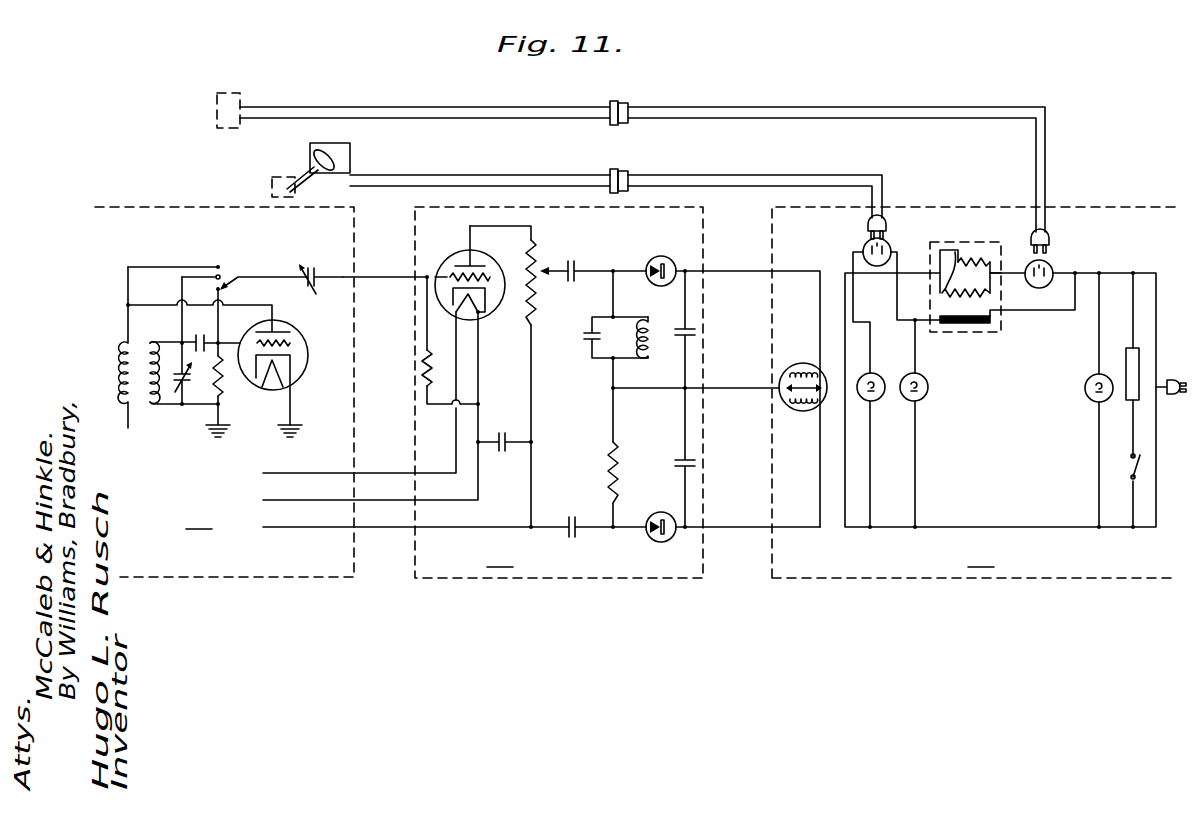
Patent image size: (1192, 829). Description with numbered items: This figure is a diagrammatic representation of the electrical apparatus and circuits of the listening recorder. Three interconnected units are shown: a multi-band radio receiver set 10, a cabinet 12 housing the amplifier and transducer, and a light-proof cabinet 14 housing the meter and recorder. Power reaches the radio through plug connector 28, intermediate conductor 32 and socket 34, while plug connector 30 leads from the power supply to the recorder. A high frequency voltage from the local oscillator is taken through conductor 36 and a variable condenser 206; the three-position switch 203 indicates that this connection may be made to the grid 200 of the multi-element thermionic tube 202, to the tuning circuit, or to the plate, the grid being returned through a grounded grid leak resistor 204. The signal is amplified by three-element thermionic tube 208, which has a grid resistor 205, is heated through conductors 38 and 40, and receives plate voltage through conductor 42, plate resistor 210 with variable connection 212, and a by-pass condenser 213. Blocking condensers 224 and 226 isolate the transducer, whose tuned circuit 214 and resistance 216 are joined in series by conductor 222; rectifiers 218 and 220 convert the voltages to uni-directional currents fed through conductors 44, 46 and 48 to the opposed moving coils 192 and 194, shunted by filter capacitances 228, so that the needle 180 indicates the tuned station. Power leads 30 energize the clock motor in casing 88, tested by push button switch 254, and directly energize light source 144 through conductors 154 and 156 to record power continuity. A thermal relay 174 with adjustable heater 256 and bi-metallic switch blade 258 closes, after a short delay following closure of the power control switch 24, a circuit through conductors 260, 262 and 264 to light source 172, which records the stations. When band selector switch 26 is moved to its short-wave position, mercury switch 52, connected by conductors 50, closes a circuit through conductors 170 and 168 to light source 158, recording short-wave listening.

The multi-band radio receiver set 10 is at (200, 518).
The cabinet 12 is at (501, 556).
The cabinet 14 is at (982, 556).
The radio power control switch 24 is at (217, 108).
The band selector switch 26 is at (272, 184).
The plug connector 28 is at (470, 115).
The plug connector 30 is at (1118, 273).
The intermediate conductor 32 is at (826, 120).
The socket 34 is at (1050, 265).
The conductor 36 is at (420, 277).
The conductor 38 is at (422, 500).
The conductor 40 is at (422, 473).
The conductor 42 is at (422, 527).
The conductor 44 is at (780, 276).
The conductor 46 is at (778, 392).
The conductor 48 is at (778, 530).
The conductors 50 is at (866, 180).
The mercury switch 52 is at (352, 156).
The casing 88 is at (1126, 352).
The light source 144 is at (1090, 398).
The conductor 154 is at (1096, 348).
The conductor 156 is at (1098, 499).
The light source 158 is at (878, 397).
The conductor 168 is at (870, 473).
The conductor 170 is at (871, 352).
The light source 172 is at (928, 388).
The thermal relay 174 is at (993, 257).
The needle 180 is at (828, 378).
The moving coil 192 is at (800, 372).
The moving coil 194 is at (803, 405).
The grid 200 is at (292, 343).
The multi-element thermionic tube 202 is at (289, 333).
The three-position switch 203 is at (237, 278).
The grid leak resistor 204 is at (223, 392).
The grid resistor 205 is at (427, 364).
The variable condenser 206 is at (306, 288).
The three-element thermionic tube 208 is at (487, 316).
The plate resistor 210 is at (537, 324).
The variable connection 212 is at (556, 274).
The by-pass condenser 213 is at (501, 456).
The tuned circuit 214 is at (596, 360).
The resistance 216 is at (609, 470).
The rectifier 218 is at (678, 247).
The rectifier 220 is at (648, 541).
The conductor 222 is at (615, 421).
The blocking condenser 224 is at (565, 268).
The blocking condenser 226 is at (566, 540).
The filter capacitances 228 is at (673, 334).
The push button switch 254 is at (1130, 469).
The adjustable heater 256 is at (967, 259).
The bi-metallic switch blade 258 is at (975, 325).
The conductor 260 is at (1036, 310).
The conductor 262 is at (917, 368).
The conductor 264 is at (915, 507).